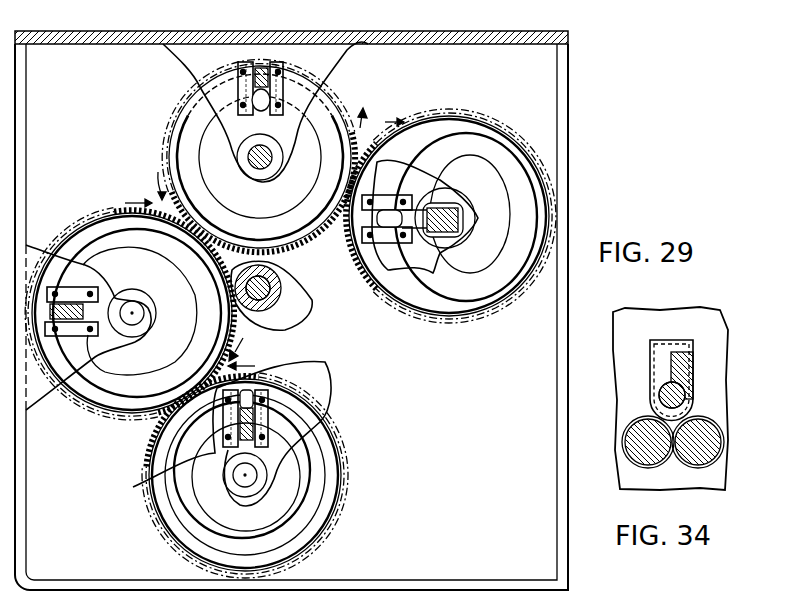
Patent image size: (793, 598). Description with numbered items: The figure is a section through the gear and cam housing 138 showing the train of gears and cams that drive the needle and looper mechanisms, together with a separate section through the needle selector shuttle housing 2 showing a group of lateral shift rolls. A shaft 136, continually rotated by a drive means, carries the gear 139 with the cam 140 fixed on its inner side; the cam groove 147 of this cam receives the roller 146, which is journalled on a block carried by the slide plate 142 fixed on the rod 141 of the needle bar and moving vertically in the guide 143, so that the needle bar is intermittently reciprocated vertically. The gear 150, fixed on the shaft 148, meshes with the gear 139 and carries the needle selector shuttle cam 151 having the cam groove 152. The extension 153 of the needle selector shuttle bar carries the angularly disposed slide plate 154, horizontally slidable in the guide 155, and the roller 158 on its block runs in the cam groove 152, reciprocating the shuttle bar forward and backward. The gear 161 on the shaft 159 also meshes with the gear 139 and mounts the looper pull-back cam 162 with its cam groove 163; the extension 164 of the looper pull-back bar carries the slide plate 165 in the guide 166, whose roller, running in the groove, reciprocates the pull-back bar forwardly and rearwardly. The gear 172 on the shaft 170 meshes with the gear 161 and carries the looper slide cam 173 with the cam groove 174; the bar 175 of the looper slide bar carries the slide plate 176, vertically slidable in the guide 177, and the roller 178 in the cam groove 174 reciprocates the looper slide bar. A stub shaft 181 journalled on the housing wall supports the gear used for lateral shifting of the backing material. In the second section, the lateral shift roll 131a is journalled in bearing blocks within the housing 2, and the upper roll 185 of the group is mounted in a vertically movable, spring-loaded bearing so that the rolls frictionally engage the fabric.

In FIG. 29, the shaft 136 is at (267, 164).
In FIG. 29, the gear and cam housing 138 is at (187, 50).
In FIG. 29, the gear 139 is at (163, 155).
In FIG. 29, the cam 140 is at (188, 118).
In FIG. 29, the rod 141 is at (265, 68).
In FIG. 29, the slide plate 142 is at (257, 68).
In FIG. 29, the guide 143 is at (281, 82).
In FIG. 29, the roller 146 is at (265, 113).
In FIG. 29, the cam groove 147 is at (185, 157).
In FIG. 29, the shaft 148 is at (460, 218).
In FIG. 29, the gear 150 is at (445, 115).
In FIG. 29, the needle selector shuttle cam 151 is at (478, 132).
In FIG. 29, the cam groove 152 is at (490, 152).
In FIG. 29, the extension 153 is at (435, 222).
In FIG. 29, the slide plate 154 is at (418, 243).
In FIG. 29, the guide 155 is at (375, 243).
In FIG. 29, the roller 158 is at (423, 207).
In FIG. 29, the shaft 159 is at (133, 314).
In FIG. 29, the gear 161 is at (82, 222).
In FIG. 29, the looper pull-back cam 162 is at (120, 398).
In FIG. 29, the cam groove 163 is at (95, 378).
In FIG. 29, the extension 164 is at (72, 312).
In FIG. 29, the slide plate 165 is at (58, 368).
In FIG. 29, the guide 166 is at (68, 288).
In FIG. 29, the shaft 170 is at (240, 484).
In FIG. 29, the gear 172 is at (147, 510).
In FIG. 29, the looper slide cam 173 is at (330, 467).
In FIG. 29, the cam groove 174 is at (300, 520).
In FIG. 29, the bar 175 is at (252, 427).
In FIG. 29, the slide plate 176 is at (133, 487).
In FIG. 29, the guide 177 is at (268, 410).
In FIG. 29, the roller 178 is at (248, 383).
In FIG. 29, the stub shaft 181 is at (277, 300).
In FIG. 34, the upper roll 185 is at (684, 397).
In FIG. 34, the lateral shift roll 131a is at (633, 450).
In FIG. 34, the needle selector shuttle housing 2 is at (712, 468).